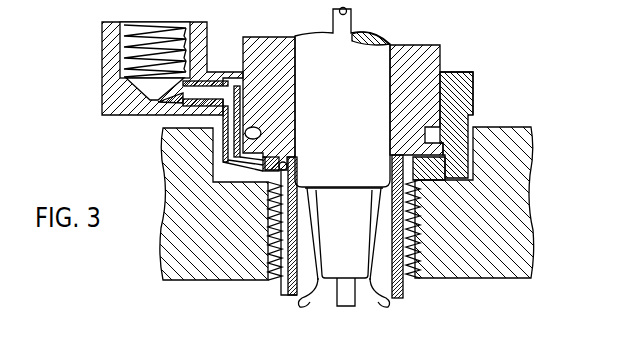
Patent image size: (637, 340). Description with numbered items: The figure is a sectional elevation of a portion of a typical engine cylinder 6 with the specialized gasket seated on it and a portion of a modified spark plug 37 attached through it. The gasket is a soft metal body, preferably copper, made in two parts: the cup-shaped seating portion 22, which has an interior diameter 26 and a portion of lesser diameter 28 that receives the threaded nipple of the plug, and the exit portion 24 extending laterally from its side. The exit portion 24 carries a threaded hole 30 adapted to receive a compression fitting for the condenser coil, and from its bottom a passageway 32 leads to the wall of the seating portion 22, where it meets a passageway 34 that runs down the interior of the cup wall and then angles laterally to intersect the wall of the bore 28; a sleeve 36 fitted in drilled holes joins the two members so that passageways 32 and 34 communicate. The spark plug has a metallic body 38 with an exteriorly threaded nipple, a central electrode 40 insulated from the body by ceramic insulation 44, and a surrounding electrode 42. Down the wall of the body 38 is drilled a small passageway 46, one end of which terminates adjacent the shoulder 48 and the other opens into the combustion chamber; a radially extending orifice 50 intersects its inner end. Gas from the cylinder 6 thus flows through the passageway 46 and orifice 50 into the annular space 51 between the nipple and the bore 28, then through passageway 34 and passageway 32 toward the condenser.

The cylinder 6 is at (530, 219).
The seating portion 22 is at (475, 100).
The exit portion 24 is at (101, 60).
The interior diameter 26 is at (440, 72).
The portion of lesser diameter 28 is at (410, 158).
The threaded hole 30 is at (177, 33).
The passageway 32 is at (173, 99).
The passageway 34 is at (244, 138).
The sleeve 36 is at (228, 89).
The spark plug 37 is at (385, 22).
The metallic body 38 is at (412, 44).
The central electrode 40 is at (350, 307).
The surrounding electrode 42 is at (322, 300).
The ceramic insulation 44 is at (360, 221).
The passageway 46 is at (286, 293).
The shoulder 48 is at (415, 162).
The orifice 50 is at (288, 167).
The annular space 51 is at (270, 180).